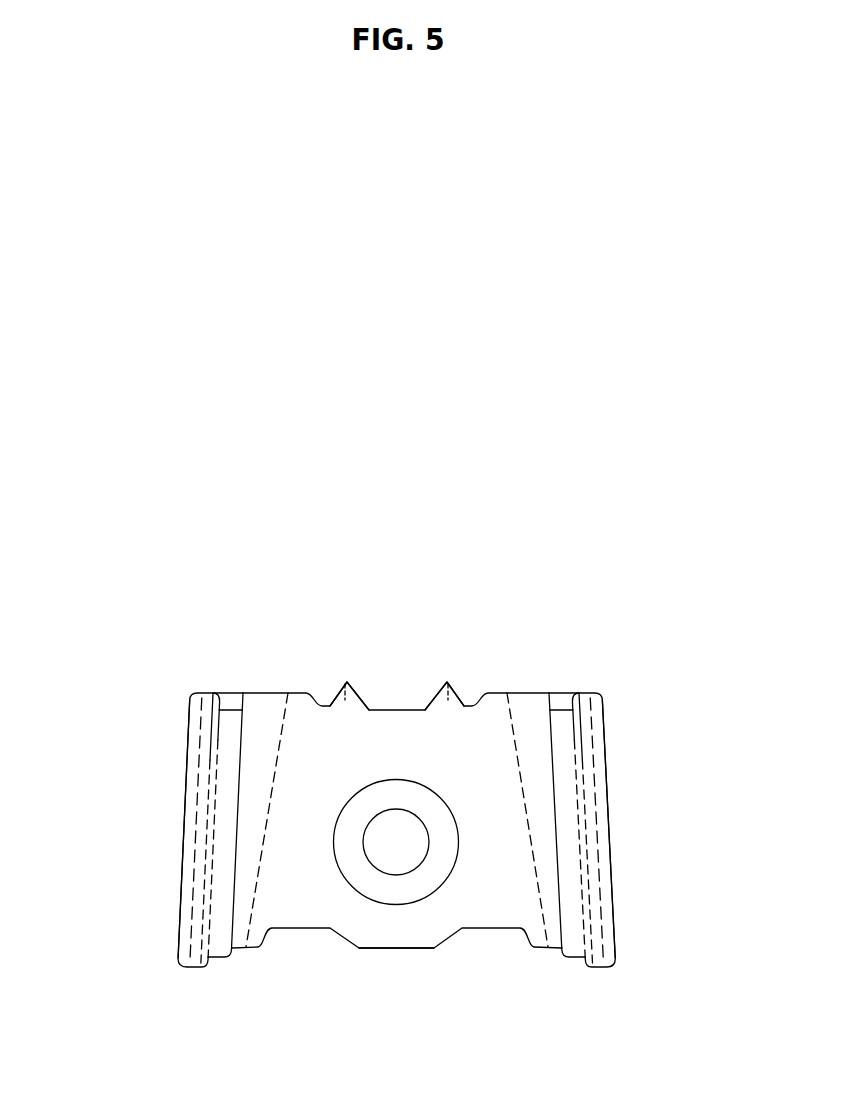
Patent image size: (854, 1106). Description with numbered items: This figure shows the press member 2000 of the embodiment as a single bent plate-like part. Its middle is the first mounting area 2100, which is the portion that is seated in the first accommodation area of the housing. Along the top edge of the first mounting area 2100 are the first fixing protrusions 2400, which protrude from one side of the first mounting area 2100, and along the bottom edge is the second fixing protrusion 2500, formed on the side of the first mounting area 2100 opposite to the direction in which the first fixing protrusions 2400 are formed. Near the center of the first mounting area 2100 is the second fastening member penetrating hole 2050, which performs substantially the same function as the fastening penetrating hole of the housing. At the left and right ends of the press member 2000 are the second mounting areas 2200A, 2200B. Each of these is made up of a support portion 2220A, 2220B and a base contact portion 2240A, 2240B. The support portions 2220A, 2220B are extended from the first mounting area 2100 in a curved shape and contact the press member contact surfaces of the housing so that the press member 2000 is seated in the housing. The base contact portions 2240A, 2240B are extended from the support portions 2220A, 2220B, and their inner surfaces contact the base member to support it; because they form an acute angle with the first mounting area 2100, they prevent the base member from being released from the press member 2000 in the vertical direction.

The press member 2000 is at (368, 337).
The first mounting area 2100 is at (397, 772).
The first fixing protrusion 2400 is at (348, 682).
The second fastening member penetrating hole 2050 is at (384, 877).
The second fixing protrusion 2500 is at (407, 924).
The second mounting area 2200A is at (609, 762).
The second mounting area 2200B is at (183, 762).
The support portion 2220A is at (614, 872).
The support portion 2220B is at (178, 872).
The base contact portion 2240A is at (593, 905).
The base contact portion 2240B is at (198, 905).